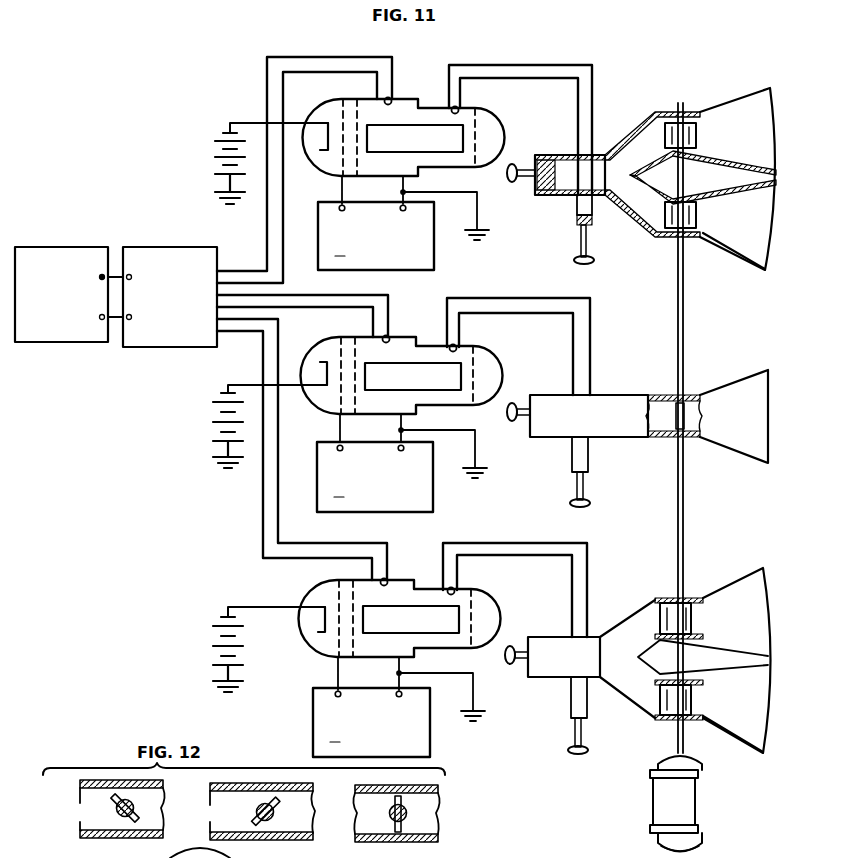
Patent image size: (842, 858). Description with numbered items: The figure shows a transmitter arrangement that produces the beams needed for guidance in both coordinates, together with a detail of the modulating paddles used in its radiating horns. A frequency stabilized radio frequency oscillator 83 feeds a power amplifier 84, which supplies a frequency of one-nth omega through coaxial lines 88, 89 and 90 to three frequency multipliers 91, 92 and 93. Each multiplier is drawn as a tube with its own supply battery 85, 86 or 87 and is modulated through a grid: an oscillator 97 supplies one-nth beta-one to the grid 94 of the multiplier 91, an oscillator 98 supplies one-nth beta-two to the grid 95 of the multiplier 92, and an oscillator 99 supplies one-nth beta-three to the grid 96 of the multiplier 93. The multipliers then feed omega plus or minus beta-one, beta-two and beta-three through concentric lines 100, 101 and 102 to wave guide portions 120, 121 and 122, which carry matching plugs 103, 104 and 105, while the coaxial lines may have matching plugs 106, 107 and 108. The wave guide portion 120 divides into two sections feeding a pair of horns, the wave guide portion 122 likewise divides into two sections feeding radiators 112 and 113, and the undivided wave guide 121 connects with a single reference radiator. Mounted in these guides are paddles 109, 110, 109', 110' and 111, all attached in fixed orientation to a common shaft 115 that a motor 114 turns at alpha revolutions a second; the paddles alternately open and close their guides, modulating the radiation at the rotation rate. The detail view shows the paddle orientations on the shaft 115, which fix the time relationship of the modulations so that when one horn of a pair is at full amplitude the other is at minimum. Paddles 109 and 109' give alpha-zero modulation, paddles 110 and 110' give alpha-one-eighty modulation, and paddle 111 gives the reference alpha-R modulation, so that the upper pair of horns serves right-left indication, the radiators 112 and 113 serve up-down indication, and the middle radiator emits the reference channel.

In FIG. 11, the frequency stabilized radio frequency oscillator 83 is at (69, 246).
In FIG. 11, the power amplifier 84 is at (175, 246).
In FIG. 11, the battery 85 is at (216, 150).
In FIG. 11, the battery 86 is at (216, 430).
In FIG. 11, the battery 87 is at (216, 637).
In FIG. 11, the coaxial line 88 is at (341, 57).
In FIG. 11, the coaxial line 89 is at (327, 296).
In FIG. 11, the coaxial line 90 is at (279, 445).
In FIG. 11, the frequency multiplier 91 is at (391, 100).
In FIG. 11, the frequency multiplier 92 is at (390, 338).
In FIG. 11, the frequency multiplier 93 is at (390, 581).
In FIG. 11, the grid 94 is at (347, 93).
In FIG. 11, the grid 95 is at (336, 331).
In FIG. 11, the grid 96 is at (342, 575).
In FIG. 11, the oscillator 97 is at (318, 241).
In FIG. 11, the oscillator 98 is at (433, 504).
In FIG. 11, the oscillator 99 is at (430, 691).
In FIG. 11, the concentric line 100 is at (530, 62).
In FIG. 11, the concentric line 101 is at (517, 296).
In FIG. 11, the concentric line 102 is at (537, 538).
In FIG. 11, the matching plug 103 is at (517, 161).
In FIG. 11, the matching plug 104 is at (514, 405).
In FIG. 11, the matching plug 105 is at (514, 647).
In FIG. 11, the matching plug 106 is at (589, 254).
In FIG. 11, the matching plug 107 is at (590, 507).
In FIG. 11, the matching plug 108 is at (588, 750).
In FIG. 11, the paddle 109 is at (700, 135).
In FIG. 12, the paddle 109 is at (100, 809).
In FIG. 11, the paddle 109' is at (664, 602).
In FIG. 12, the paddle 109' is at (76, 815).
In FIG. 11, the paddle 110 is at (701, 215).
In FIG. 12, the paddle 110 is at (242, 811).
In FIG. 11, the paddle 110' is at (660, 711).
In FIG. 12, the paddle 110' is at (210, 821).
In FIG. 11, the paddle 111 is at (672, 410).
In FIG. 12, the paddle 111 is at (385, 803).
In FIG. 11, the radiator 112 is at (732, 588).
In FIG. 11, the radiator 113 is at (745, 740).
In FIG. 11, the motor 114 is at (698, 812).
In FIG. 11, the common shaft 115 is at (677, 457).
In FIG. 11, the wave guide portion 120 is at (564, 198).
In FIG. 11, the wave guide portion 121 is at (627, 393).
In FIG. 11, the wave guide portion 122 is at (564, 678).